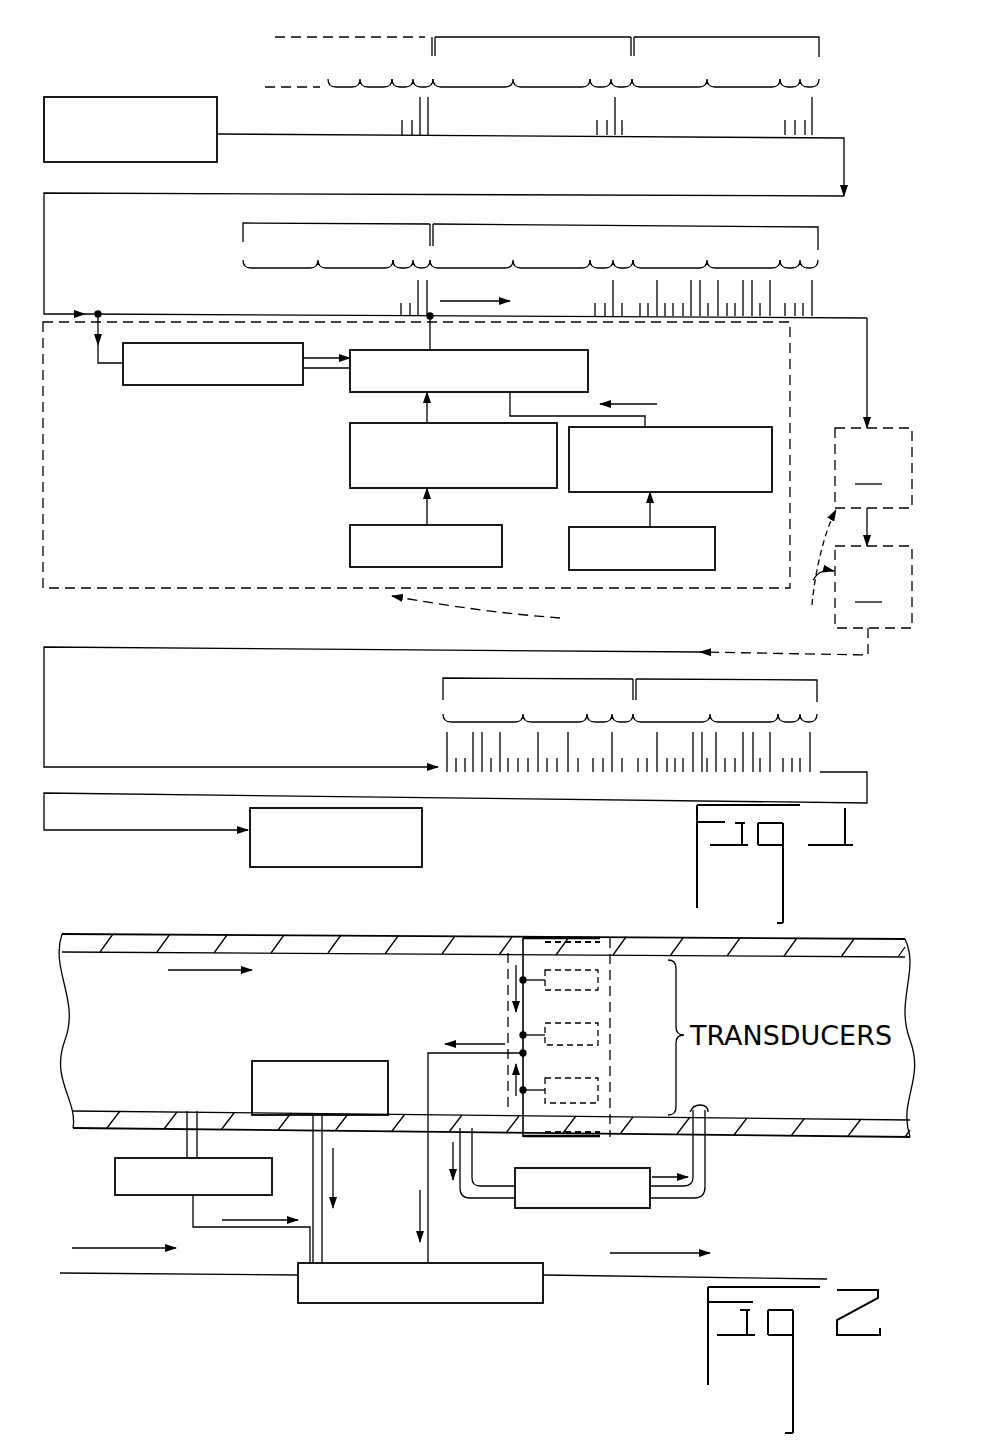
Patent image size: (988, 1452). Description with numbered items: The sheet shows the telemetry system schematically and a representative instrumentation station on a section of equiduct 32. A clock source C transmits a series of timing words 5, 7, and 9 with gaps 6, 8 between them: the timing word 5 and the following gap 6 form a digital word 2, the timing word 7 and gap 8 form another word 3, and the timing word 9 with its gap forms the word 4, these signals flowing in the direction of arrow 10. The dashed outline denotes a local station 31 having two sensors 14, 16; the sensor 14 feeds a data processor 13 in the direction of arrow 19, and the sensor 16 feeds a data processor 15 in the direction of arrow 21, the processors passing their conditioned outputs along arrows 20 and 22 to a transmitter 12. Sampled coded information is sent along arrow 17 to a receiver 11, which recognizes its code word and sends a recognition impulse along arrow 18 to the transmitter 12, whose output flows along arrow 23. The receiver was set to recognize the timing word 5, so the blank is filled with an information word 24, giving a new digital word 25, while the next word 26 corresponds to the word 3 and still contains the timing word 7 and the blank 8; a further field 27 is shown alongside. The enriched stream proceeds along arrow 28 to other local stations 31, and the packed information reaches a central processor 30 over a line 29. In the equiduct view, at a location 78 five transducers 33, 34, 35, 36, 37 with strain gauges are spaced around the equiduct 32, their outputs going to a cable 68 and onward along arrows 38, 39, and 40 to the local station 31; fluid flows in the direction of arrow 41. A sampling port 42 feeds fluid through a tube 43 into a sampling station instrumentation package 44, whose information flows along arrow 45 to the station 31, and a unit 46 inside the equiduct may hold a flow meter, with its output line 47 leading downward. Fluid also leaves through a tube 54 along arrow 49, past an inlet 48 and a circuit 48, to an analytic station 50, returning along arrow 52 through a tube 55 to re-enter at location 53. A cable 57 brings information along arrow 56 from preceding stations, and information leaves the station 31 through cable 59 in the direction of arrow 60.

In FIG. 1, the clock source C is at (155, 97).
In FIG. 1, the digital word 2 is at (788, 40).
In FIG. 1, the word 3 is at (595, 42).
In FIG. 1, the word 4 is at (396, 42).
In FIG. 1, the timing word 5 is at (798, 413).
In FIG. 1, the gap 6 is at (706, 71).
In FIG. 1, the timing word 7 is at (610, 413).
In FIG. 1, the gap 8 is at (510, 162).
In FIG. 1, the timing word 9 is at (413, 80).
In FIG. 1, the arrow 10 is at (462, 226).
In FIG. 1, the receiver 11 is at (280, 385).
In FIG. 1, the transmitter 12 is at (578, 350).
In FIG. 1, the data processor 13 is at (350, 455).
In FIG. 1, the sensor 14 is at (502, 548).
In FIG. 1, the data processor 15 is at (705, 427).
In FIG. 1, the sensor 16 is at (715, 546).
In FIG. 1, the arrow 17 is at (92, 337).
In FIG. 1, the arrow 18 is at (326, 348).
In FIG. 1, the arrow 19 is at (407, 507).
In FIG. 1, the arrow 20 is at (406, 408).
In FIG. 1, the arrow 21 is at (668, 511).
In FIG. 1, the arrow 22 is at (618, 404).
In FIG. 1, the arrow 23 is at (441, 301).
In FIG. 1, the information word 24 is at (706, 506).
In FIG. 1, the digital word 25 is at (764, 227).
In FIG. 1, the word 26 is at (576, 226).
In FIG. 1, the data field 27 is at (515, 733).
In FIG. 1, the arrow 28 is at (897, 340).
In FIG. 1, the line 29 is at (470, 648).
In FIG. 1, the central processor 30 is at (422, 845).
In FIG. 1, the local station 31 is at (477, 488).
In FIG. 2, the local station 31 is at (455, 1303).
In FIG. 2, the equiduct 32 is at (205, 935).
In FIG. 2, the transducer 33 is at (592, 942).
In FIG. 2, the transducer 34 is at (598, 985).
In FIG. 2, the transducer 35 is at (598, 1035).
In FIG. 2, the transducer 36 is at (598, 1088).
In FIG. 2, the transducer 37 is at (598, 1130).
In FIG. 2, the arrow 38 is at (508, 978).
In FIG. 2, the arrow 39 is at (508, 1097).
In FIG. 2, the arrow 40 is at (463, 1130).
In FIG. 2, the arrow 41 is at (198, 969).
In FIG. 2, the sampling port 42 is at (193, 1112).
In FIG. 2, the tube 43 is at (186, 1140).
In FIG. 2, the sampling station instrumentation package 44 is at (272, 1185).
In FIG. 2, the arrow 45 is at (255, 1220).
In FIG. 2, the unit 46 is at (252, 1080).
In FIG. 2, the flow meter output line 47 is at (347, 1189).
In FIG. 2, the inlet 48 is at (449, 1084).
In FIG. 2, the arrow 49 is at (458, 1148).
In FIG. 2, the analytic station 50 is at (572, 1208).
In FIG. 2, the arrow 52 is at (661, 1177).
In FIG. 2, the location 53 is at (708, 1108).
In FIG. 2, the tube 54 is at (468, 1200).
In FIG. 2, the tube 55 is at (708, 1188).
In FIG. 2, the arrow 56 is at (94, 1240).
In FIG. 2, the cable 57 is at (232, 1276).
In FIG. 2, the cable 59 is at (682, 1280).
In FIG. 2, the arrow 60 is at (638, 1253).
In FIG. 2, the cable 68 is at (428, 1072).
In FIG. 2, the location 78 is at (590, 928).